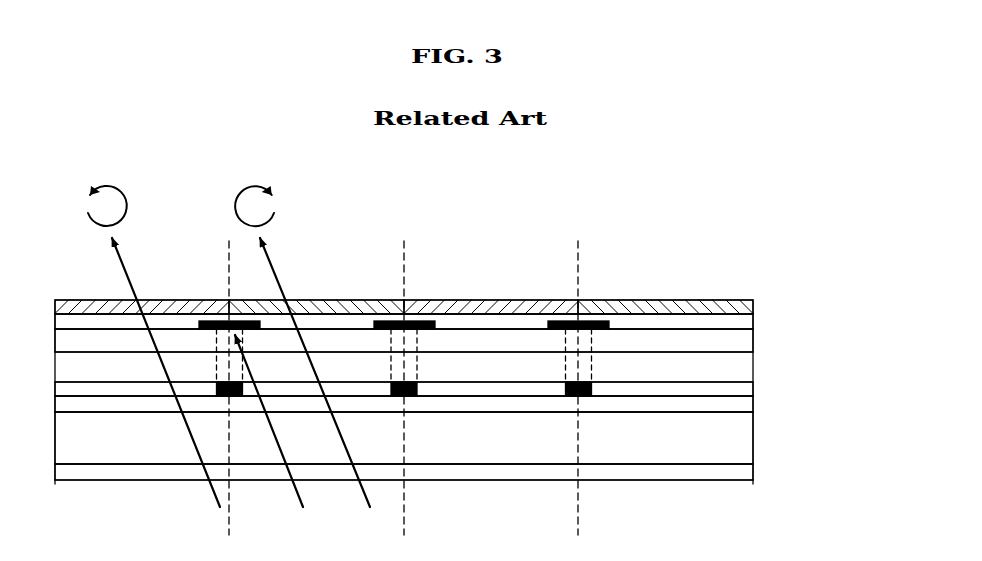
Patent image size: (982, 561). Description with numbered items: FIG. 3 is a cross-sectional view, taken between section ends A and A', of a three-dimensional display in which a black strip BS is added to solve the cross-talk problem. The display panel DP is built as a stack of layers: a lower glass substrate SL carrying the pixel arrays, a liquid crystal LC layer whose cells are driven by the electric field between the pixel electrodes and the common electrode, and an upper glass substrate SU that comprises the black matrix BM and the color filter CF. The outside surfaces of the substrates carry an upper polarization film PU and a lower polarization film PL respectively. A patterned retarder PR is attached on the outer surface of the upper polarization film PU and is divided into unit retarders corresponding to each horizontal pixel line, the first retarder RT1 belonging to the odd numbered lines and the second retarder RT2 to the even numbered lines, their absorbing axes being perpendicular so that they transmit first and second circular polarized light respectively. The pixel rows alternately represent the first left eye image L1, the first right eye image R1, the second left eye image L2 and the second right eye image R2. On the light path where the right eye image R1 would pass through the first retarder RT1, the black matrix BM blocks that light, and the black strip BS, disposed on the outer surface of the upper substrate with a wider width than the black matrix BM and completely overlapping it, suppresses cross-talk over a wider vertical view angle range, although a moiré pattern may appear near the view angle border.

The display panel DP is at (825, 323).
The patterned retarder PR is at (757, 308).
The first retarder RT1 is at (83, 300).
The second retarder RT2 is at (333, 300).
The upper polarization film PU is at (747, 322).
The black strip BS is at (217, 321).
The upper glass substrate SU is at (747, 348).
The black matrix BM is at (592, 381).
The color filter CF is at (747, 388).
The liquid crystal LC is at (747, 403).
The lower glass substrate SL is at (747, 438).
The lower polarization film PL is at (747, 472).
The first left eye image L1 is at (154, 348).
The first right eye image R1 is at (299, 348).
The second left eye image L2 is at (455, 389).
The second right eye image R2 is at (627, 389).
The section line end A is at (55, 493).
The section line end A' is at (750, 492).